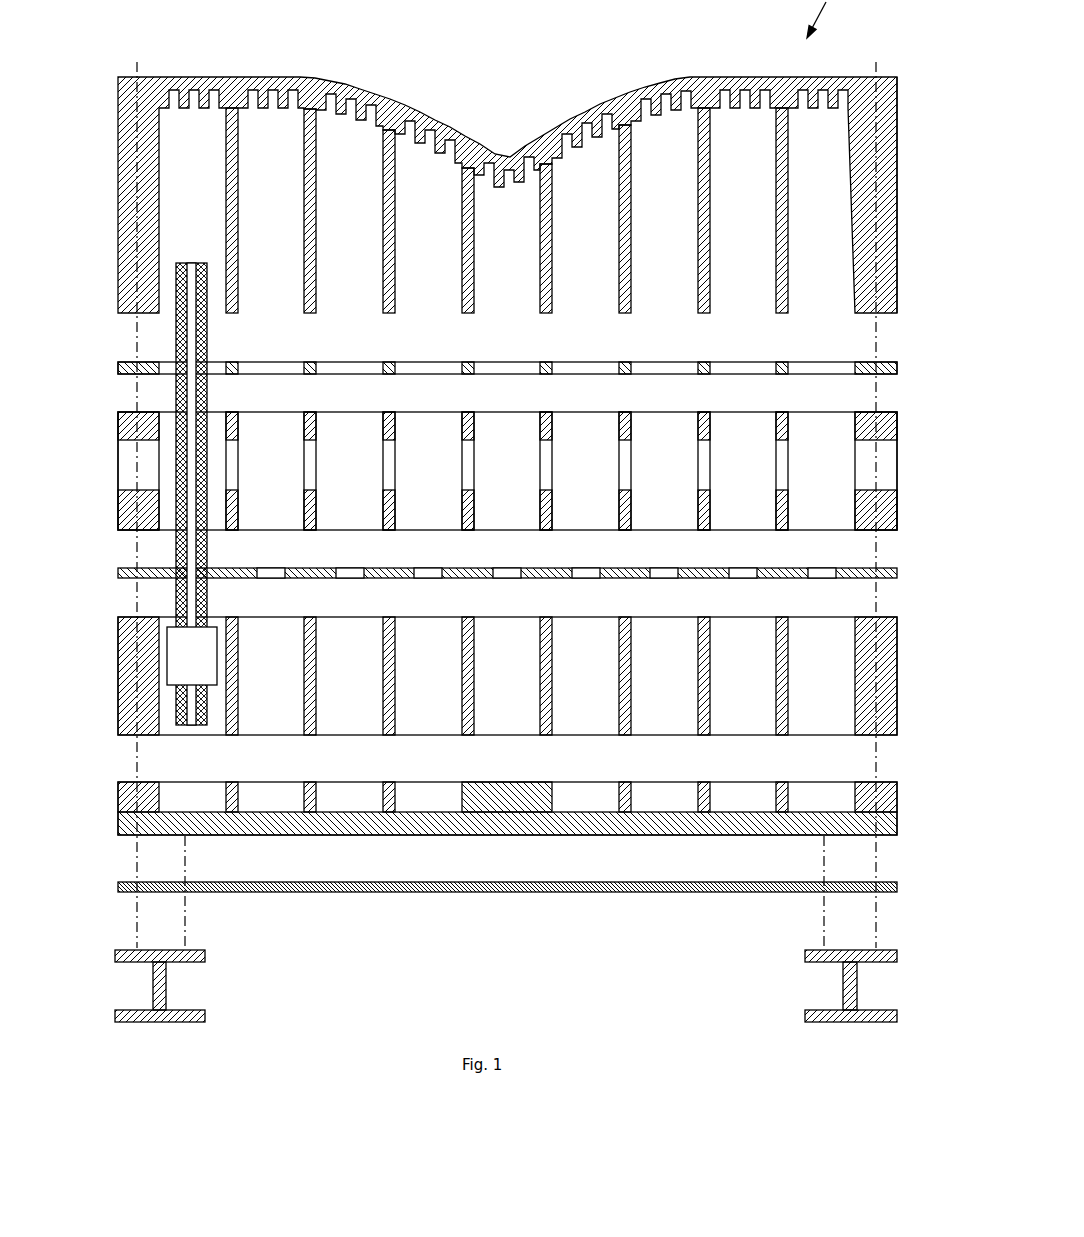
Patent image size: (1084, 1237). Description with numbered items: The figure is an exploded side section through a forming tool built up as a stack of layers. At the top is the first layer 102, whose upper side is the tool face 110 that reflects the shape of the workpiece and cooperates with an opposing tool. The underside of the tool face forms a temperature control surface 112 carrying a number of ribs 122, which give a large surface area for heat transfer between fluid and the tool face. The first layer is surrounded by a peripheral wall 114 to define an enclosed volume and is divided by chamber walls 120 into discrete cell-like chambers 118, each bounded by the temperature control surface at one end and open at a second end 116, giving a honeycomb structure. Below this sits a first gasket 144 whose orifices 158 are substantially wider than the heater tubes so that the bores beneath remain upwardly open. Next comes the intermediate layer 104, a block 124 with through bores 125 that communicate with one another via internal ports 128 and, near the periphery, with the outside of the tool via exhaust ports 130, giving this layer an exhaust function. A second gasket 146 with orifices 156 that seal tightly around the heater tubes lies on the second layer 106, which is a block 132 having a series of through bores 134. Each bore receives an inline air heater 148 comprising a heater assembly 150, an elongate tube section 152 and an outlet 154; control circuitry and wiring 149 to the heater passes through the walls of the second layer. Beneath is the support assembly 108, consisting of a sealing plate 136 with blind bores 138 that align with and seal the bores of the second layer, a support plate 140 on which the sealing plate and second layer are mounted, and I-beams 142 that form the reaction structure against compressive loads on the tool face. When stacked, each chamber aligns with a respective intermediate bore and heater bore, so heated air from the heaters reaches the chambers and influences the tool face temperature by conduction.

The first layer 102 is at (502, 161).
The intermediate layer 104 is at (500, 461).
The second layer 106 is at (512, 676).
The support assembly 108 is at (499, 921).
The tool face 110 is at (402, 103).
The temperature control surface 112 is at (428, 165).
The peripheral wall 114 is at (898, 178).
The second end 116 is at (838, 333).
The chambers 118 is at (210, 187).
The chamber walls 120 is at (238, 205).
The ribs 122 is at (206, 108).
The block 124 is at (897, 433).
The through bores 125 is at (285, 481).
The internal ports 128 is at (387, 460).
The exhaust ports 130 is at (887, 470).
The block 132 is at (897, 637).
The through bores 134 is at (284, 686).
The sealing plate 136 is at (539, 790).
The blind bores 138 is at (183, 803).
The support plate 140 is at (543, 893).
The I-beams 142 is at (506, 1023).
The first gasket 144 is at (485, 345).
The second gasket 146 is at (474, 559).
The inline air heater 148 is at (239, 598).
The control circuitry and wiring 149 is at (167, 657).
The heater assembly 150 is at (205, 666).
The tube section 152 is at (210, 548).
The outlet 154 is at (190, 262).
The orifices 156 is at (350, 568).
The orifices 158 is at (278, 362).